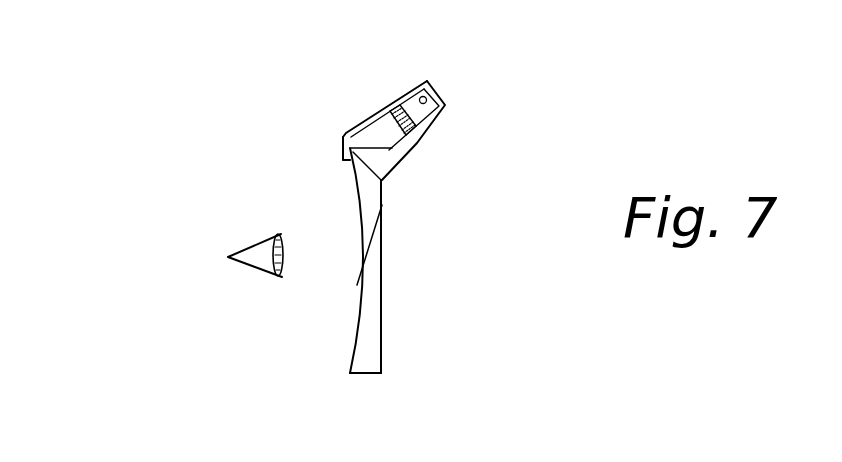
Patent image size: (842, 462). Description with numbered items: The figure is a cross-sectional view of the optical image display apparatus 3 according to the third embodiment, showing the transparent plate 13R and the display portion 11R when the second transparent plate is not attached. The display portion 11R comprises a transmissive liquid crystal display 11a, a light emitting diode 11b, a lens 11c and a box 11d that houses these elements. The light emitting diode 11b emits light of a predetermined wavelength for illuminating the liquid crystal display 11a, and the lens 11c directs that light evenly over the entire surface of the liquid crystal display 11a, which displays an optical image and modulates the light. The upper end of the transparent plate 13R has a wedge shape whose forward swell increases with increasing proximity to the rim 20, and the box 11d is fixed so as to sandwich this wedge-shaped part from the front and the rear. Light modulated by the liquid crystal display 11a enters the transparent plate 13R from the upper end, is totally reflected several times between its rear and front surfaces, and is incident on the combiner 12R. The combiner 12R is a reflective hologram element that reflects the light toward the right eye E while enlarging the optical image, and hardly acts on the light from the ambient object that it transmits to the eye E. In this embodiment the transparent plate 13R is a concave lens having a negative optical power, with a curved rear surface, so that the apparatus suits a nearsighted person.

The optical image display apparatus 3 is at (450, 423).
The display portion 11R is at (470, 103).
The transmissive liquid crystal display 11a is at (388, 108).
The light emitting diode 11b is at (423, 80).
The lens 11c is at (408, 92).
The box 11d is at (350, 131).
The combiner 12R is at (283, 257).
The transparent plate 13R is at (370, 329).
The rim 20 is at (362, 374).
The right eye E is at (253, 252).